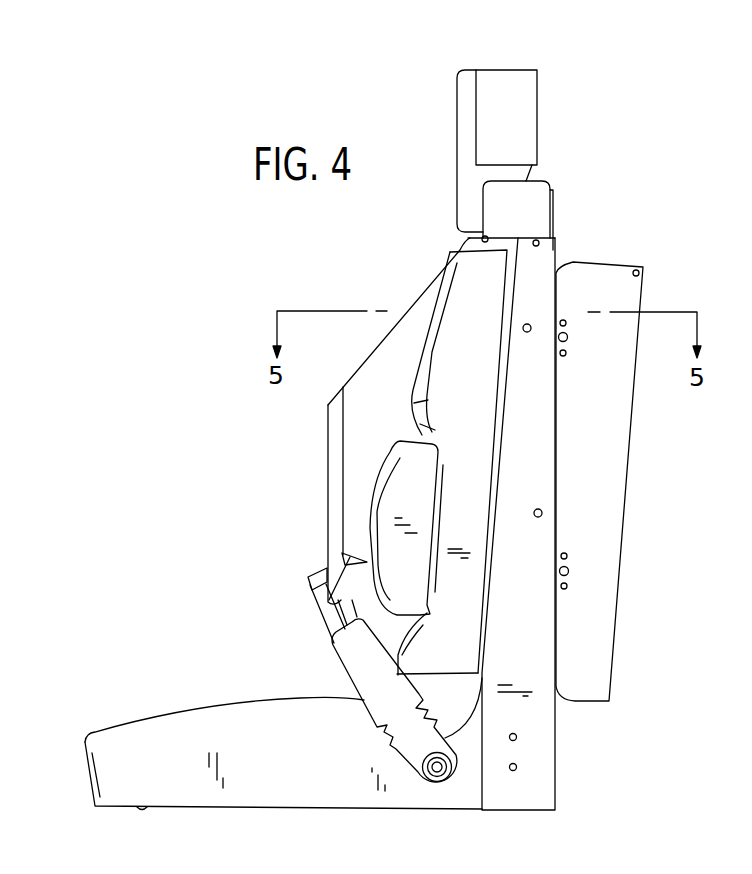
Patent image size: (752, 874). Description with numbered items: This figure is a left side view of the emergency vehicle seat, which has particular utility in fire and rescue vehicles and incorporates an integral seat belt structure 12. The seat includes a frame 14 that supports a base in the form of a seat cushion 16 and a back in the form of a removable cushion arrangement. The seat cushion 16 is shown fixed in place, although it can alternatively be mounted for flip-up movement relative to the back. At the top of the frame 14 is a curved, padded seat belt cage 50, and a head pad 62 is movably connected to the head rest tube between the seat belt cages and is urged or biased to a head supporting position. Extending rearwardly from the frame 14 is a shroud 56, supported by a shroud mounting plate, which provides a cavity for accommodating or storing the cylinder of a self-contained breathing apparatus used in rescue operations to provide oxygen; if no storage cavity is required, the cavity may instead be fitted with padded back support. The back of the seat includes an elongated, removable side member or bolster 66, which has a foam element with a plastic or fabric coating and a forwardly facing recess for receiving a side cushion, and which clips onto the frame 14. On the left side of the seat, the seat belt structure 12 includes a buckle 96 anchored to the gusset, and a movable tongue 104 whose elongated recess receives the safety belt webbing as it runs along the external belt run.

The integral seat belt structure 12 is at (328, 490).
The frame 14 is at (555, 752).
The seat cushion 16 is at (87, 741).
The seat belt cage 50 is at (550, 181).
The shroud 56 is at (610, 262).
The head pad 62 is at (498, 70).
The bolster 66 is at (430, 329).
The buckle 96 is at (340, 677).
The tongue 104 is at (318, 592).